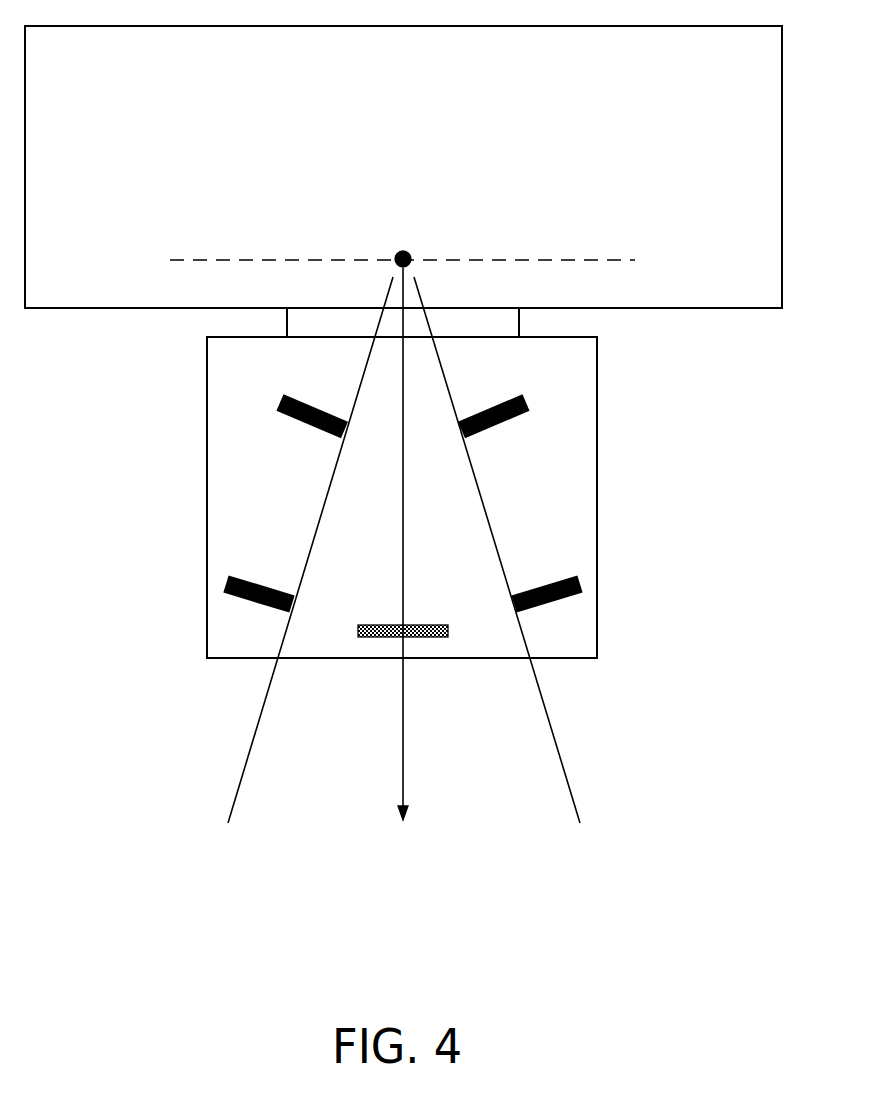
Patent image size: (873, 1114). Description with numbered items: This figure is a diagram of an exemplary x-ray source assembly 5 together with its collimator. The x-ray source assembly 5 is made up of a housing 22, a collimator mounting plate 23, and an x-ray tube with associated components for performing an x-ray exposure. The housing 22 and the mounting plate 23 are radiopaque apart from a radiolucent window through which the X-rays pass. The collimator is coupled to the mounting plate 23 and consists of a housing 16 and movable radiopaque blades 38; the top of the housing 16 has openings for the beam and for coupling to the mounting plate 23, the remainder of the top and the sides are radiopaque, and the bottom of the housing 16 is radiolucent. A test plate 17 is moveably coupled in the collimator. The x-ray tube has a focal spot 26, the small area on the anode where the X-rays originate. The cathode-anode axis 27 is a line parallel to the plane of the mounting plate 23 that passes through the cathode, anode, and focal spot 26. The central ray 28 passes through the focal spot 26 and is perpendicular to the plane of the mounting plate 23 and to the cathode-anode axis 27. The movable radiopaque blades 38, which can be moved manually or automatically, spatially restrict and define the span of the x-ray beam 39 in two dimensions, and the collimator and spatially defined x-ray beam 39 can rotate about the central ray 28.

The x-ray source assembly 5 is at (409, 113).
The housing 22 is at (489, 26).
The collimator mounting plate 23 is at (519, 322).
The housing 16 is at (263, 495).
The test plate 17 is at (372, 623).
The focal spot 26 is at (407, 251).
The cathode-anode axis 27 is at (287, 258).
The central ray 28 is at (404, 722).
The movable radiopaque blades 38 is at (493, 427).
The x-ray beam 39 is at (581, 828).